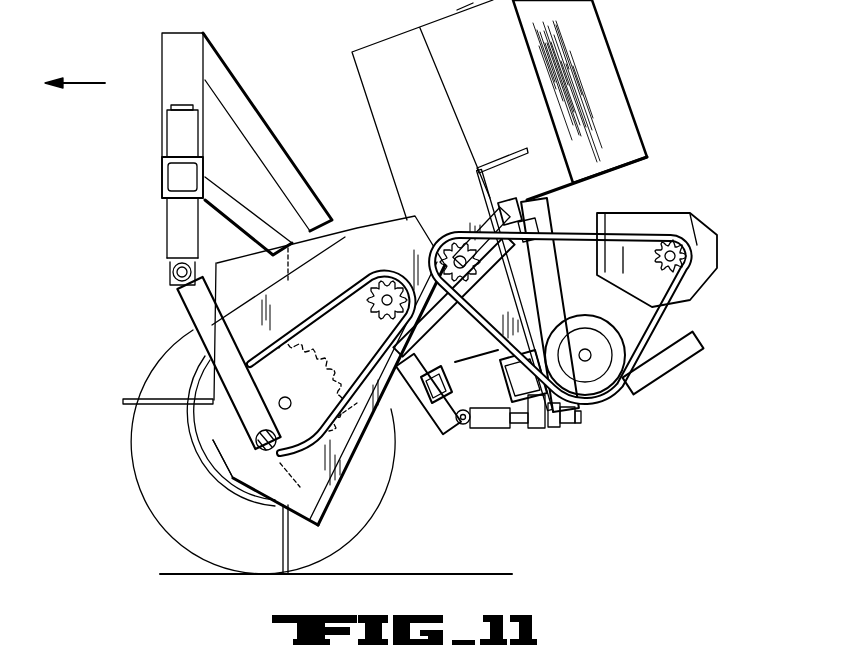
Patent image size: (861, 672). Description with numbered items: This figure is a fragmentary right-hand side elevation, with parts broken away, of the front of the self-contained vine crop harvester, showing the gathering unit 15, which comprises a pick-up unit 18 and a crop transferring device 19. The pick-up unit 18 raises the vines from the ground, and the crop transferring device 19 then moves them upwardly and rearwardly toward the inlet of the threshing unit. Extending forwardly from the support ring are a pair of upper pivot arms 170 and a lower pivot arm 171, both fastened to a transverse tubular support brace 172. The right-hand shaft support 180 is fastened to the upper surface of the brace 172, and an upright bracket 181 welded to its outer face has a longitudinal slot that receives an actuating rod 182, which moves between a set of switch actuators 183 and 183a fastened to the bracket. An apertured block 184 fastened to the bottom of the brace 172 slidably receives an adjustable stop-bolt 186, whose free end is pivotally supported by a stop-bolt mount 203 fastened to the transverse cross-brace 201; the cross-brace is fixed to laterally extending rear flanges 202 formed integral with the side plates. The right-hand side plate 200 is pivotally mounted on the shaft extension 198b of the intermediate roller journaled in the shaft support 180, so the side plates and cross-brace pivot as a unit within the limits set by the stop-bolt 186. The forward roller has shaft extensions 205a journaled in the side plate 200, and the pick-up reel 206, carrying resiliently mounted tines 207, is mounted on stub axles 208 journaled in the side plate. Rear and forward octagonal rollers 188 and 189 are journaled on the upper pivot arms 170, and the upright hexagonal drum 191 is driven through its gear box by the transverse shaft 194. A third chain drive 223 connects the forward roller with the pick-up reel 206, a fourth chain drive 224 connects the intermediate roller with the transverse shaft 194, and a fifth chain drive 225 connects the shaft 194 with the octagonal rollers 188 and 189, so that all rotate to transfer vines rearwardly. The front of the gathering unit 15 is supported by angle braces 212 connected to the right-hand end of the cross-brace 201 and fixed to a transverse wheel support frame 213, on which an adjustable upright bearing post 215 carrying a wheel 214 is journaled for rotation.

The gathering unit 15 is at (123, 442).
The pick-up unit 18 is at (137, 395).
The crop transferring device 19 is at (610, 192).
The upper pivot arms 170 is at (683, 228).
The lower pivot arm 171 is at (683, 345).
The tubular support brace 172 is at (520, 426).
The right-hand shaft support 180 is at (494, 356).
The upright bracket 181 is at (478, 172).
The actuating rod 182 is at (545, 209).
The switch actuator 183 is at (500, 210).
The switch actuator 183a is at (491, 325).
The apertured blocks 184 is at (548, 428).
The adjustable stop-bolt 186 is at (578, 418).
The rear octagonal roller 188 is at (710, 250).
The forward octagonal roller 189 is at (610, 215).
The upright hexagonal drum 191 is at (490, 54).
The transverse shaft 194 is at (588, 360).
The shaft extension 198b is at (487, 226).
The right-hand side plate 200 is at (357, 228).
The transverse cross-brace 201 is at (430, 430).
The rear flanges 202 is at (385, 438).
The stop-bolt mounts 203 is at (453, 428).
The shaft extensions 205a is at (352, 315).
The pick-up reel 206 is at (213, 393).
The tines 207 is at (127, 402).
The stub axles 208 is at (315, 388).
The angle braces 212 is at (228, 190).
The wheel support frame 213 is at (167, 40).
The wheels 214 is at (170, 523).
The bearing posts 215 is at (175, 222).
The third chain drive 223 is at (384, 300).
The fourth chain drive 224 is at (613, 392).
The fifth chain drive 225 is at (653, 312).